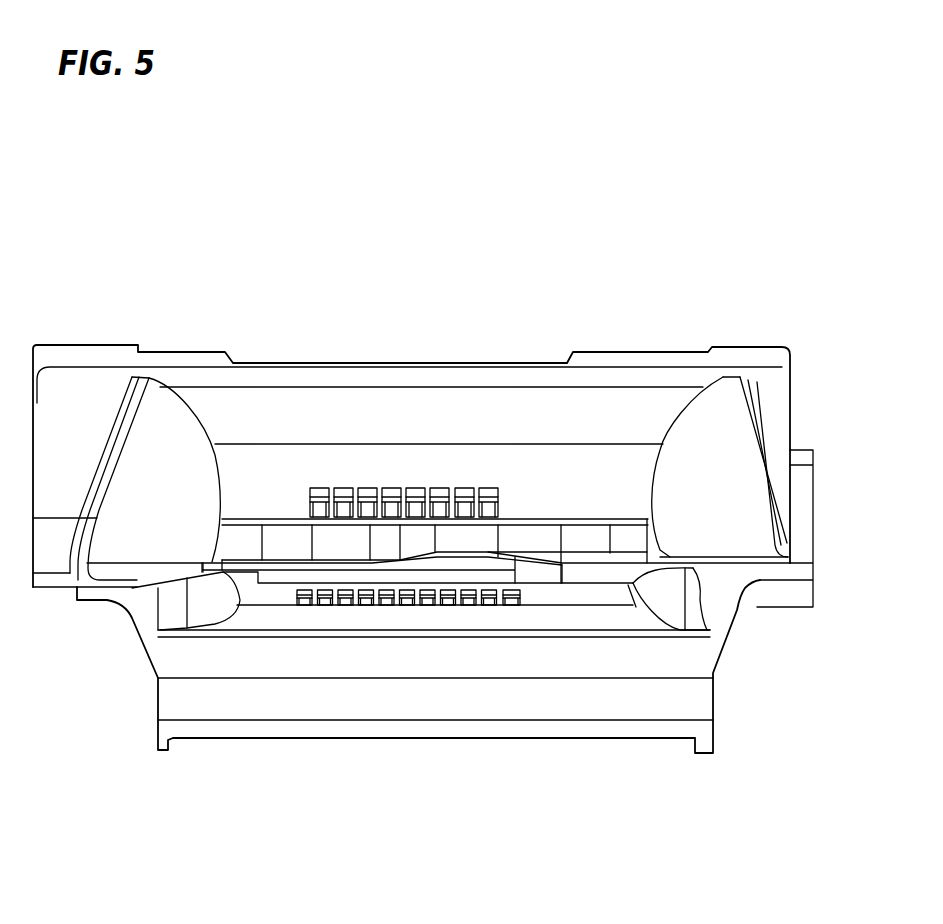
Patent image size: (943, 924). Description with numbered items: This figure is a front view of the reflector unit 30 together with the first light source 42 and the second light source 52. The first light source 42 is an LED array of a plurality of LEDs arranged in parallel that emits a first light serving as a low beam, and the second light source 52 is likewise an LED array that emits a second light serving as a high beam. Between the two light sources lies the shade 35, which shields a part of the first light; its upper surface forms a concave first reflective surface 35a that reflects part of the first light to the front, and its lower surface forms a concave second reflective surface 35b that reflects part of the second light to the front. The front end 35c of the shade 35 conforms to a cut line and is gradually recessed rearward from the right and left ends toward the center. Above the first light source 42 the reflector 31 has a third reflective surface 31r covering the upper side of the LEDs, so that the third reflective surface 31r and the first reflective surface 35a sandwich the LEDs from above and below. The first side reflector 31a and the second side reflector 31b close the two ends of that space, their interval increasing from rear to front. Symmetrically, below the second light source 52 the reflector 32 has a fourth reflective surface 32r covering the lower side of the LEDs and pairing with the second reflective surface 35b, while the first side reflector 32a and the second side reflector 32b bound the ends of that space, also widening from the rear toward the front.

The reflector unit 30 is at (158, 326).
The reflector for the first light source 31 is at (485, 373).
The first side reflector for the first light source 31a is at (165, 480).
The second side reflector for the first light source 31b is at (698, 490).
The third reflective surface 31r is at (442, 398).
The reflector for the second light source 32 is at (566, 637).
The first side reflector for the second light source 32a is at (212, 590).
The second side reflector for the second light source 32b is at (665, 603).
The fourth reflective surface 32r is at (590, 622).
The shade 35 is at (625, 537).
The first reflective surface 35a is at (276, 543).
The second reflective surface 35b is at (282, 573).
The front end of the shade 35c is at (498, 527).
The first light source 42 is at (338, 481).
The second light source 52 is at (386, 607).